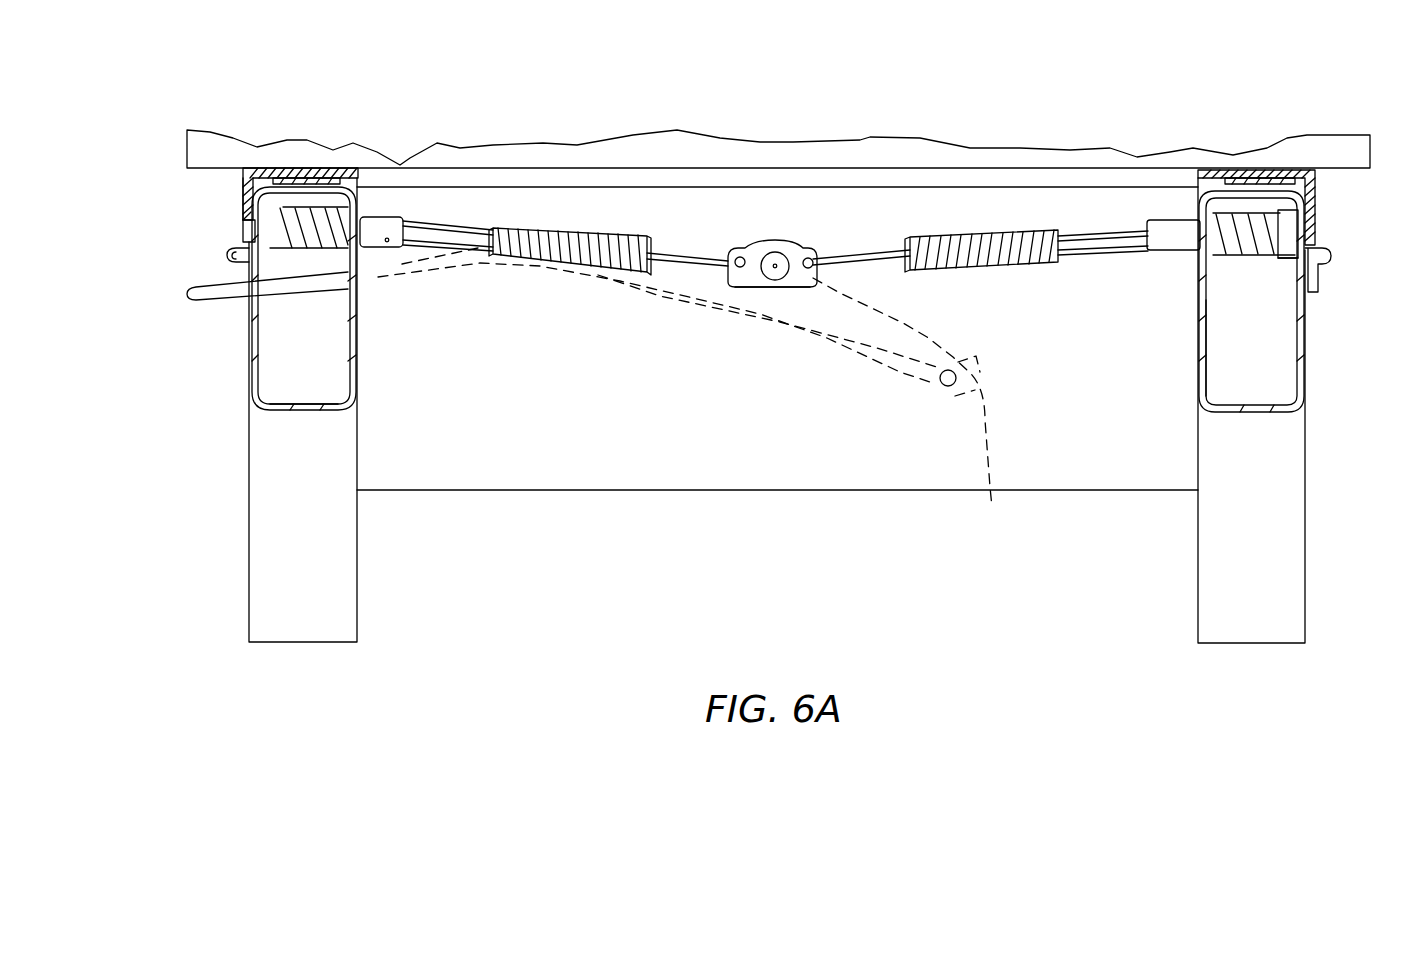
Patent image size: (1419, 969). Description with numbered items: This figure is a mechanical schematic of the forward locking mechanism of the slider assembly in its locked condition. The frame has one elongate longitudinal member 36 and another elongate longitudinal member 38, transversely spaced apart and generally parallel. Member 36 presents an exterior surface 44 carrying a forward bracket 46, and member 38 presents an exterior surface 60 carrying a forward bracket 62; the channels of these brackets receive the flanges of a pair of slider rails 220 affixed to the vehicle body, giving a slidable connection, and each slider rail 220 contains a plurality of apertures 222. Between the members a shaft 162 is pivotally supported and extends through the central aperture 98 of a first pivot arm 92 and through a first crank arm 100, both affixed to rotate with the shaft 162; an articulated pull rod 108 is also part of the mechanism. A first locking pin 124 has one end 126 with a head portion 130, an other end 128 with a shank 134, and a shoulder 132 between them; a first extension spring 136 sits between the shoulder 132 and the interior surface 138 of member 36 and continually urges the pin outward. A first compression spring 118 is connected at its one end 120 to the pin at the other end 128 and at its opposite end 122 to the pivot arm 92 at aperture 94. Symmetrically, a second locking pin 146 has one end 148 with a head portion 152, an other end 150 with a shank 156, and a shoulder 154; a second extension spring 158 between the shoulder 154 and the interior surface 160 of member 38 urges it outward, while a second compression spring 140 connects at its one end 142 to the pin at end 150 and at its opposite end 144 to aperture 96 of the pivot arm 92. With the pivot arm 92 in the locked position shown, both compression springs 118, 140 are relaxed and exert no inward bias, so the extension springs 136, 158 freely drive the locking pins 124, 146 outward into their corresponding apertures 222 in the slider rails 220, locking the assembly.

The one elongate longitudinal member 36 is at (347, 362).
The other elongate longitudinal member 38 is at (1247, 415).
The exterior surface 44 is at (250, 357).
The forward bracket 46 is at (247, 273).
The exterior surface 60 is at (1310, 327).
The forward bracket 62 is at (1331, 256).
The first pivot arm 92 is at (810, 256).
The aperture 94 is at (747, 246).
The aperture 96 is at (818, 258).
The central aperture 98 is at (785, 252).
The first crank arm 100 is at (689, 391).
The articulated pull rod 108 is at (215, 302).
The first compression spring 118 is at (560, 228).
The one end 120 is at (408, 217).
The opposite end 122 is at (732, 286).
The first locking pin 124 is at (376, 217).
The one end 126 is at (243, 228).
The other end 128 is at (462, 224).
The head portion 130 is at (256, 228).
The shoulder 132 is at (273, 248).
The shank 134 is at (388, 242).
The first extension spring 136 is at (317, 228).
The interior surface 138 is at (302, 405).
The second compression spring 140 is at (990, 238).
The one end 142 is at (1145, 220).
The opposite end 144 is at (850, 240).
The second locking pin 146 is at (1263, 227).
The one end 148 is at (1300, 232).
The other end 150 is at (1112, 232).
The head portion 152 is at (1312, 228).
The shoulder 154 is at (1290, 272).
The shank 156 is at (1178, 248).
The second extension spring 158 is at (1225, 235).
The interior surface 160 is at (1210, 352).
The shaft 162 is at (778, 272).
The slider rail 220 is at (273, 173).
The aperture 222 is at (243, 195).